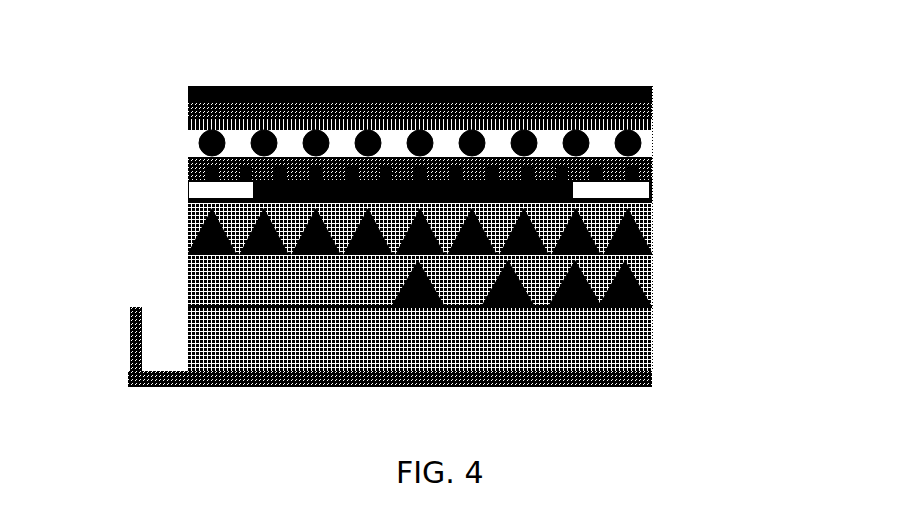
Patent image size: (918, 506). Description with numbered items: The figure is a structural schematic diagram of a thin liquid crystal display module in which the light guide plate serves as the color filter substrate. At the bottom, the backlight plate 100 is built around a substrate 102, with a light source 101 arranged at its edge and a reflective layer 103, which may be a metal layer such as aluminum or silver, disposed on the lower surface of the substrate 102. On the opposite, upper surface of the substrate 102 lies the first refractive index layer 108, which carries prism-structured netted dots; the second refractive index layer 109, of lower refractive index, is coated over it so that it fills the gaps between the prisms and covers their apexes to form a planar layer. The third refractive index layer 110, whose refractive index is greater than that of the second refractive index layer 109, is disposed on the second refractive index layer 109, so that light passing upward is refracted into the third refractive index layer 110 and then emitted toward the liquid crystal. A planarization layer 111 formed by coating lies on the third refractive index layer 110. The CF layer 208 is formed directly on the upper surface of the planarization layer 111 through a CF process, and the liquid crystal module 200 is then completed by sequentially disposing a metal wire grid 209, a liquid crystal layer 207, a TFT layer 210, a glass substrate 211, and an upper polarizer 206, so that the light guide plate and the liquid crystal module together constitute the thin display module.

The backlight plate 100 is at (766, 232).
The light source 101 is at (130, 341).
The substrate 102 is at (652, 340).
The reflective layer 103 is at (128, 379).
The first refractive index layer 108 is at (652, 298).
The second refractive index layer 109 is at (652, 280).
The third refractive index layer 110 is at (652, 246).
The planarization layer 111 is at (652, 218).
The liquid crystal module 200 is at (765, 36).
The upper polarizer 206 is at (652, 87).
The liquid crystal layer 207 is at (641, 143).
The CF layer 208 is at (652, 184).
The metal wire grid 209 is at (652, 163).
The TFT layer 210 is at (652, 125).
The glass substrate 211 is at (652, 107).